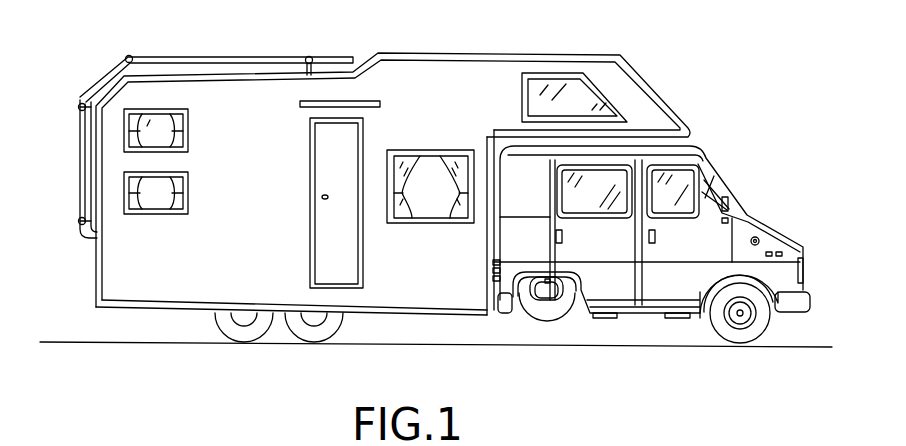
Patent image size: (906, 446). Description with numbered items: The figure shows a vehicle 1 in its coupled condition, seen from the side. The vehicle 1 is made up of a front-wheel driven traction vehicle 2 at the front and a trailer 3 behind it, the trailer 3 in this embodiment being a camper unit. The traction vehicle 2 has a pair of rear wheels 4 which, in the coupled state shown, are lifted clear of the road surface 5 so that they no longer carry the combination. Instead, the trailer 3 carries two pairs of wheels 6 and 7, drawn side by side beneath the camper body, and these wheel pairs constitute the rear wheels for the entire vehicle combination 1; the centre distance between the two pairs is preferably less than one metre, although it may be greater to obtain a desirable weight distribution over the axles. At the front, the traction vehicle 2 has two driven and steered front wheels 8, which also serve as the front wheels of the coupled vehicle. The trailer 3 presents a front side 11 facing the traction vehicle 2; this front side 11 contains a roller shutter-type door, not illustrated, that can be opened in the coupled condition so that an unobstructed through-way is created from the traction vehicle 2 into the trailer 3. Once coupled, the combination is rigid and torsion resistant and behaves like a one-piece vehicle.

The vehicle 1 is at (653, 66).
The traction vehicle 2 is at (748, 199).
The trailer 3 is at (65, 188).
The rear wheels 4 is at (547, 312).
The road surface 5 is at (605, 348).
The pair of wheels 6 is at (321, 337).
The pair of wheels 7 is at (250, 337).
The front wheels 8 is at (743, 337).
The front side 11 is at (489, 157).